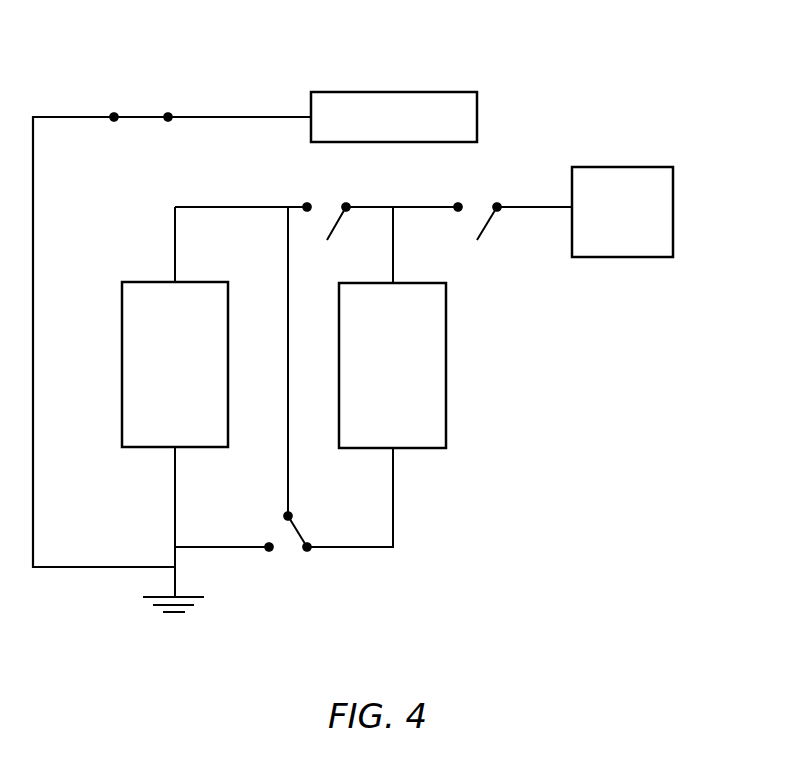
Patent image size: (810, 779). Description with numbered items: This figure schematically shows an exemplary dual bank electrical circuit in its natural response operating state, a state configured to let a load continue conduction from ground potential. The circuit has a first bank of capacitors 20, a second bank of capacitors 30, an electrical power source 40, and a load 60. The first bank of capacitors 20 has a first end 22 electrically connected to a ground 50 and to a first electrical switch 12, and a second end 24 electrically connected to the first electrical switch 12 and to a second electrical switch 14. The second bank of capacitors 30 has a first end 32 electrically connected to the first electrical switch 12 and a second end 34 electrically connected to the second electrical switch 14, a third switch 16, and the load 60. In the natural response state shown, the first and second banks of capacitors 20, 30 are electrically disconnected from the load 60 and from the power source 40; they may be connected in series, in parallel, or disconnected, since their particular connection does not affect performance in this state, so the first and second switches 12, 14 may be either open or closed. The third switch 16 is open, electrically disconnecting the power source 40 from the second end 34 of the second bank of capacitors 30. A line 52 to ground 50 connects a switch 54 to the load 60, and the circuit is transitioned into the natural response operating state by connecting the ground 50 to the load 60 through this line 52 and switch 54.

The first electrical switch 12 is at (306, 562).
The second electrical switch 14 is at (317, 188).
The third switch 16 is at (499, 190).
The first bank of capacitors 20 is at (121, 316).
The first end 22 is at (175, 484).
The second end 24 is at (191, 207).
The second bank of capacitors 30 is at (446, 373).
The first end 32 is at (393, 486).
The second end 34 is at (393, 237).
The electrical power source 40 is at (673, 186).
The ground 50 is at (147, 620).
The line 52 is at (70, 115).
The switch 54 is at (144, 106).
The load 60 is at (477, 115).